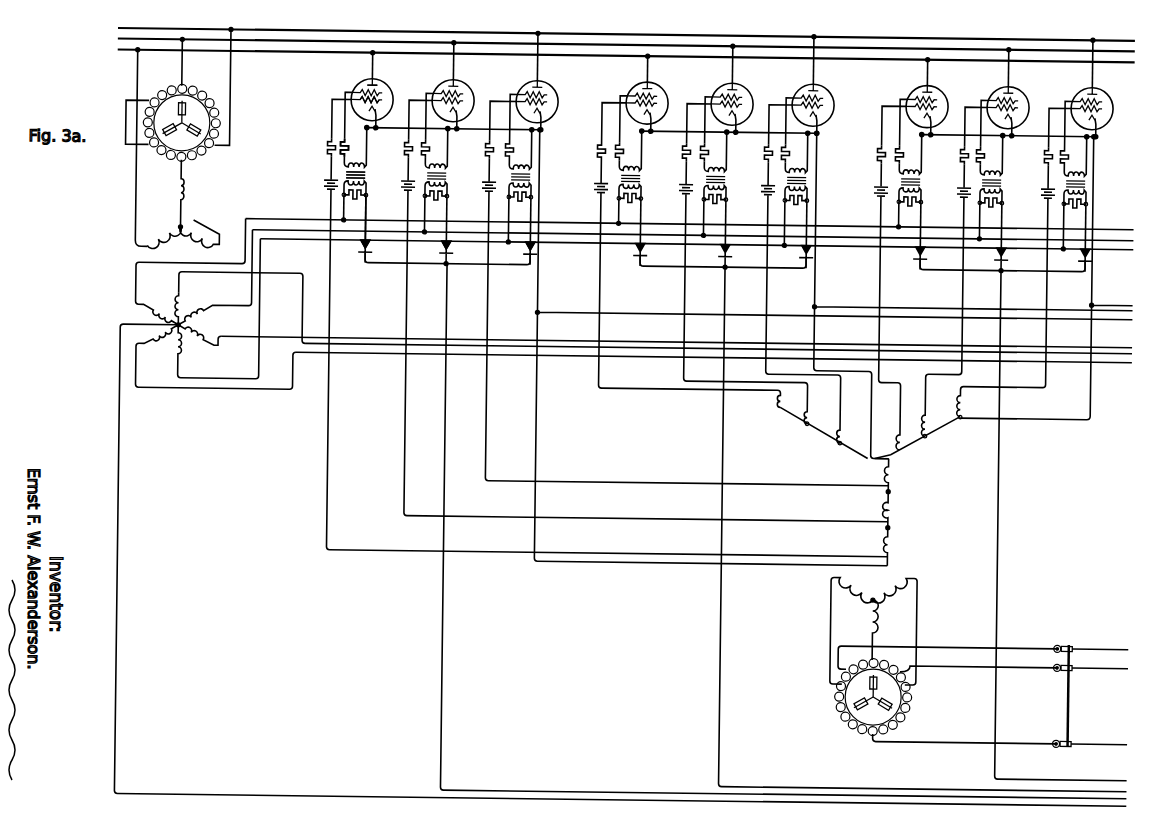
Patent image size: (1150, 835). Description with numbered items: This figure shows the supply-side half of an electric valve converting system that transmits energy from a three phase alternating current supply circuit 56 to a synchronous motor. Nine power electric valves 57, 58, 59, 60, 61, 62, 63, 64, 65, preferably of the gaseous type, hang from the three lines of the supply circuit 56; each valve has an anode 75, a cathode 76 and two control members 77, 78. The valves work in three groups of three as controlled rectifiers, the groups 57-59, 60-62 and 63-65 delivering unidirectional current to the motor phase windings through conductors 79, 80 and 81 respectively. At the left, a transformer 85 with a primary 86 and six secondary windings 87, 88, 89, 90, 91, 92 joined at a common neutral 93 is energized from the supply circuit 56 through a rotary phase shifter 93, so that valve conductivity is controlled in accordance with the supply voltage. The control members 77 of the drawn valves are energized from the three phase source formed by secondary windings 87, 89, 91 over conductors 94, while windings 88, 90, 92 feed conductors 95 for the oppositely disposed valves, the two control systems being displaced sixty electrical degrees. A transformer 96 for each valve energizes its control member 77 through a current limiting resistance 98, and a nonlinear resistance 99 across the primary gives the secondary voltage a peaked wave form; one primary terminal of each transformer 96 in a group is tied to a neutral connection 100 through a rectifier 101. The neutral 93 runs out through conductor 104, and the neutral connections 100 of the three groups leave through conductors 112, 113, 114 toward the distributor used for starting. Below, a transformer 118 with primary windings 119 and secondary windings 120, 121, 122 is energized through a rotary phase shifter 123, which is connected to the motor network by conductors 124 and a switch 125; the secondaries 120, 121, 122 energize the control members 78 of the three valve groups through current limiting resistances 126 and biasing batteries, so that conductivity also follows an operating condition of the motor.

The three phase alternating current supply circuit 56 is at (1124, 25).
The electric valve 57 is at (383, 82).
The electric valve 58 is at (465, 82).
The electric valve 59 is at (549, 82).
The electric valve 60 is at (658, 82).
The electric valve 61 is at (743, 83).
The electric valve 62 is at (825, 83).
The electric valve 63 is at (917, 83).
The electric valve 64 is at (1000, 83).
The electric valve 65 is at (1084, 83).
The anode 75 is at (370, 80).
The cathode 76 is at (377, 124).
The control member 77 is at (391, 93).
The control member 78 is at (346, 90).
The conductor 79 is at (1103, 307).
The conductor 80 is at (1075, 296).
The conductor 81 is at (1116, 289).
The transformer 85 is at (110, 270).
The primary winding 86 is at (178, 206).
The secondary winding 87 is at (190, 271).
The secondary winding 88 is at (186, 303).
The secondary winding 89 is at (215, 277).
The secondary winding 90 is at (200, 344).
The secondary winding 91 is at (219, 308).
The secondary winding 92 is at (215, 356).
The rotary phase shifter 93 is at (162, 176).
The conductors 94 is at (282, 213).
The conductors 95 is at (1108, 332).
The transformer 96 is at (368, 172).
The current limiting resistance 98 is at (350, 142).
The nonlinear resistance 99 is at (369, 204).
The neutral connection 100 is at (450, 262).
The rectifier 101 is at (364, 249).
The conductor 104 is at (120, 641).
The conductor 112 is at (1013, 783).
The conductor 113 is at (751, 783).
The conductor 114 is at (486, 783).
The transformer 118 is at (938, 557).
The primary winding 119 is at (884, 613).
The secondary winding 120 is at (896, 518).
The secondary winding 121 is at (816, 425).
The secondary winding 122 is at (934, 427).
The rotary phase shifter 123 is at (948, 696).
The conductors 124 is at (1105, 660).
The switch 125 is at (1073, 689).
The current limiting resistance 126 is at (329, 146).